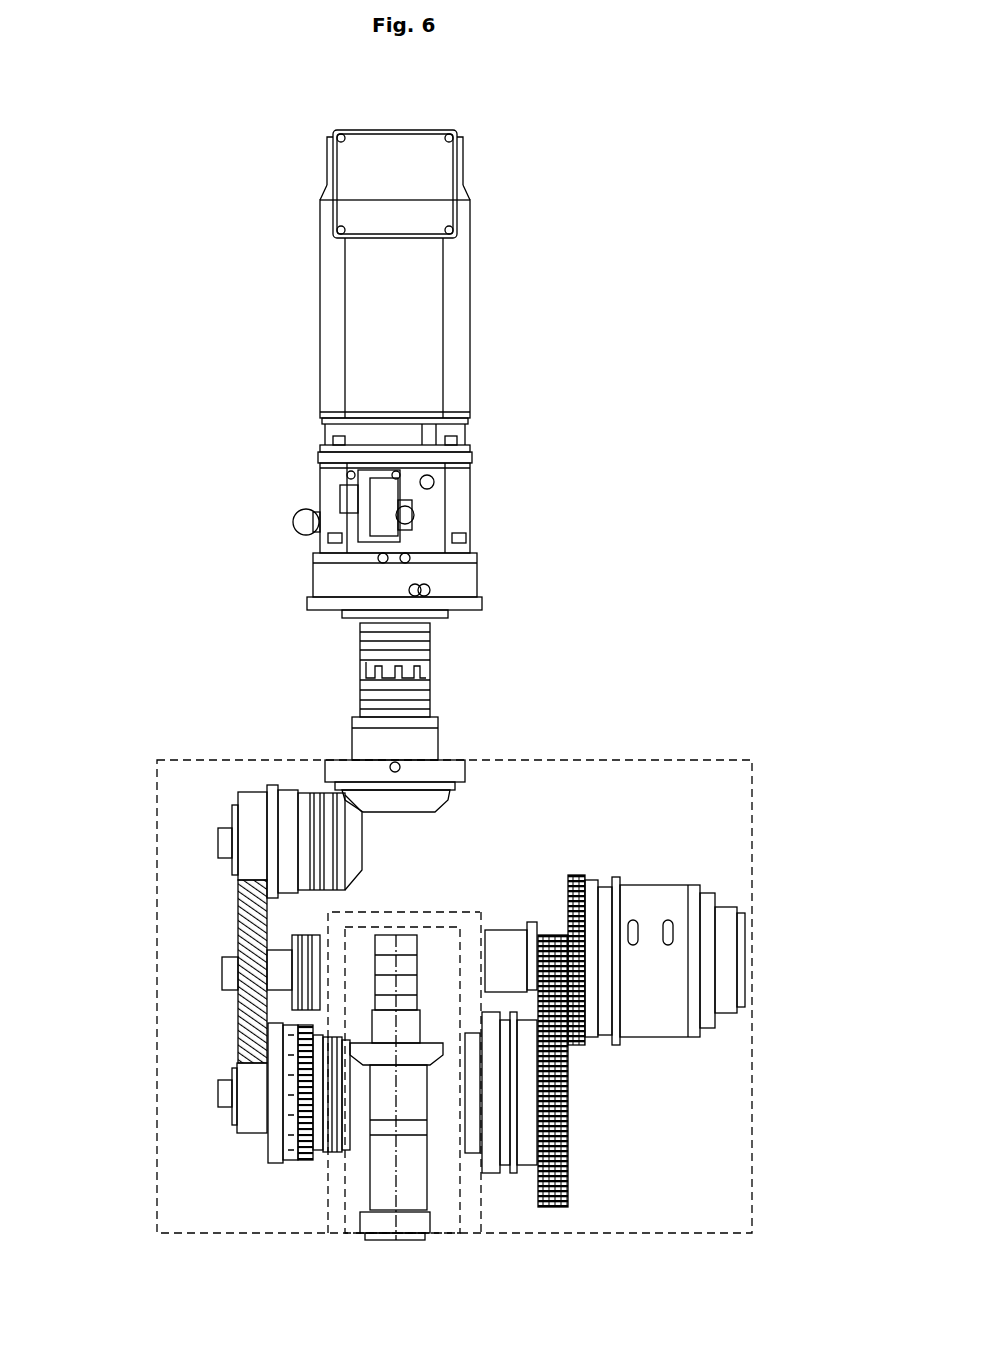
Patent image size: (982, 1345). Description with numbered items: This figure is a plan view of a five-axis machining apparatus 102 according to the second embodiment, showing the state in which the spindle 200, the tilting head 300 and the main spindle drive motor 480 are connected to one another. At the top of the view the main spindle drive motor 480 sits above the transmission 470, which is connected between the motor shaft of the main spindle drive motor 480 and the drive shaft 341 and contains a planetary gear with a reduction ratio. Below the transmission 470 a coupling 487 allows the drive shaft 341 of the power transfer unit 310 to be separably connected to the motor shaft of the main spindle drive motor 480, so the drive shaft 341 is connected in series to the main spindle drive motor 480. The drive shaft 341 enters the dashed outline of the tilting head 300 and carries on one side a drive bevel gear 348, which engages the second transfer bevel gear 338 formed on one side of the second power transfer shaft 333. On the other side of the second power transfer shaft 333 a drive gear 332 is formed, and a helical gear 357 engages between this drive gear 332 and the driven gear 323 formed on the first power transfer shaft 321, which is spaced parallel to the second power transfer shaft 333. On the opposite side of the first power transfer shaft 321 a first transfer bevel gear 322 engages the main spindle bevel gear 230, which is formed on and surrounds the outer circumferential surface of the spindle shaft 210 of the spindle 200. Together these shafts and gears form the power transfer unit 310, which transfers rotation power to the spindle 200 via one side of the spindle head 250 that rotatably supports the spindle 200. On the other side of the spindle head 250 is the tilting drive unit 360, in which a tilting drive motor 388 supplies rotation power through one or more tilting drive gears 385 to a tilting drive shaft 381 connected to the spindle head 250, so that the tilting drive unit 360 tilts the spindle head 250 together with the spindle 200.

The five-axis machining apparatus 102 is at (512, 197).
The main spindle drive motor 480 is at (478, 300).
The transmission 470 is at (480, 497).
The coupling 487 is at (430, 692).
The drive shaft 341 is at (445, 737).
The drive bevel gear 348 is at (430, 805).
The tilting head 300 is at (600, 757).
The drive gear 332 is at (246, 790).
The second power transfer shaft 333 is at (216, 843).
The second transfer bevel gear 338 is at (363, 843).
The helical gear 357 is at (235, 912).
The first transfer bevel gear 322 is at (355, 1068).
The first power transfer shaft 321 is at (216, 1092).
The driven gear 323 is at (255, 1122).
The power transfer unit 310 is at (155, 1198).
The spindle head 250 is at (345, 1197).
The spindle 200 is at (408, 1188).
The spindle shaft 210 is at (380, 1197).
The main spindle bevel gear 230 is at (428, 1040).
The tilting drive shaft 381 is at (475, 1140).
The tilting drive gear 385 is at (580, 1050).
The tilting drive unit 360 is at (590, 1150).
The tilting drive motor 388 is at (652, 898).